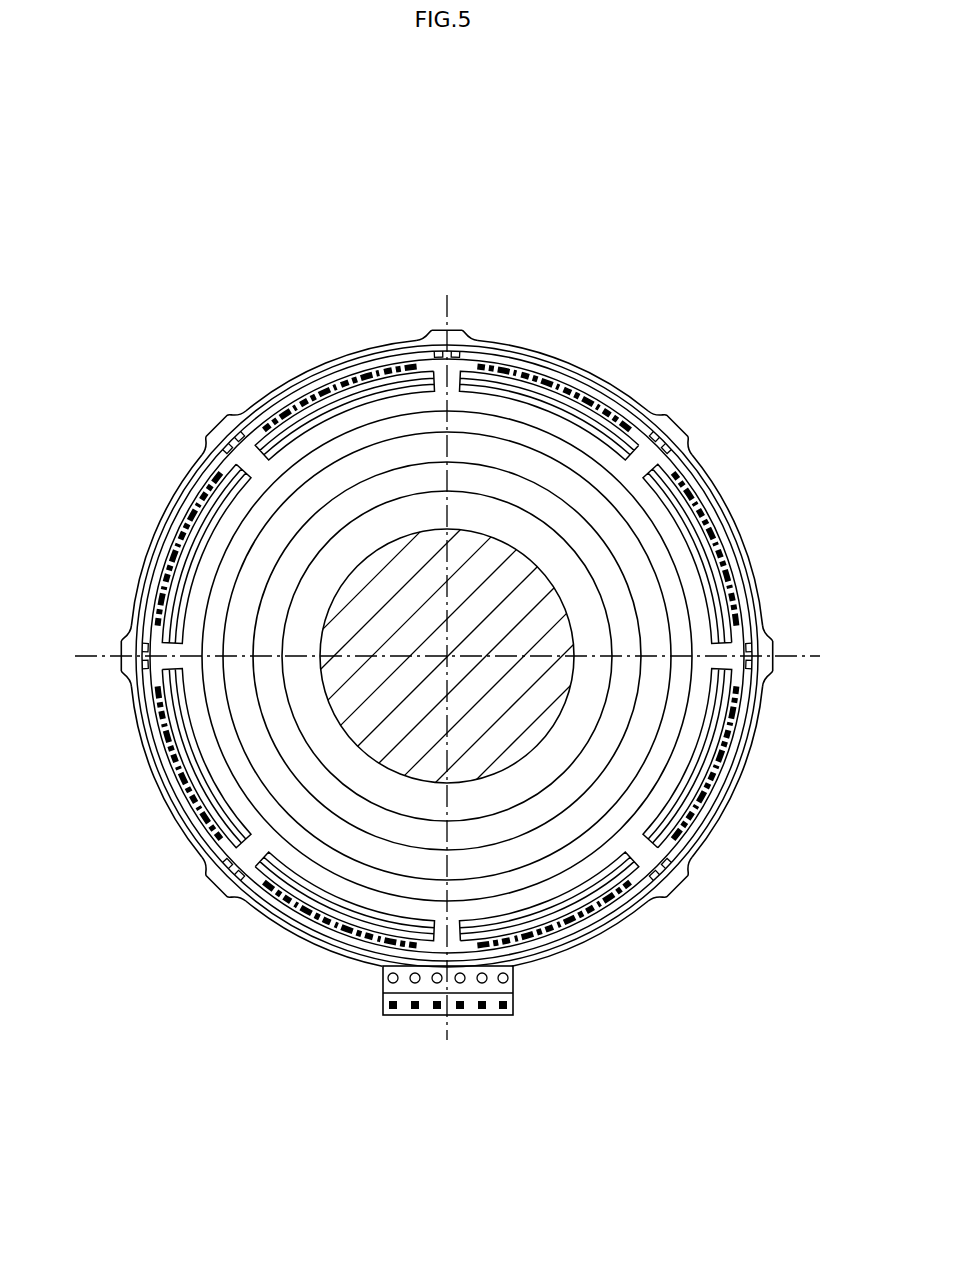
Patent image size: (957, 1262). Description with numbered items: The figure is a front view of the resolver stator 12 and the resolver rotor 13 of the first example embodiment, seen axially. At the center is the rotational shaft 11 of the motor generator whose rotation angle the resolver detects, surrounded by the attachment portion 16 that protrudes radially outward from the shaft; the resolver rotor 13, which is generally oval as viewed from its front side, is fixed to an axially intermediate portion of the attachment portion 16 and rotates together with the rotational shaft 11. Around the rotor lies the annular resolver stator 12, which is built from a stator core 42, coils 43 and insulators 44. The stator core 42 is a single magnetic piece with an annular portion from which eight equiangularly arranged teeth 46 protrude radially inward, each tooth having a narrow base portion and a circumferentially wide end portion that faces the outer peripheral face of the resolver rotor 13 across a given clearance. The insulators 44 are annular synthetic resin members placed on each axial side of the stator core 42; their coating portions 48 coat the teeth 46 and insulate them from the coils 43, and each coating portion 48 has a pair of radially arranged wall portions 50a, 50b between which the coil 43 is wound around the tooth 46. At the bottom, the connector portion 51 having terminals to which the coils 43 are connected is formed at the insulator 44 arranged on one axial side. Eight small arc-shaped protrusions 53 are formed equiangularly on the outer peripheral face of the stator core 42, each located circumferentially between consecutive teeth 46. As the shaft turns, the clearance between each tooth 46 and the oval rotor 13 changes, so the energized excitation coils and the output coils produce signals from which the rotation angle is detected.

The rotational shaft 11 is at (406, 560).
The resolver stator 12 is at (146, 788).
The resolver rotor 13 is at (238, 873).
The attachment portion 16 is at (355, 532).
The stator core 42 is at (580, 357).
The coils 43 is at (481, 366).
The insulators 44 is at (626, 404).
The teeth 46 is at (391, 392).
The coating portions 48 is at (323, 910).
The wall portion 50a is at (312, 922).
The wall portion 50b is at (343, 937).
The connector portion 51 is at (406, 1018).
The protrusions 53 is at (440, 328).